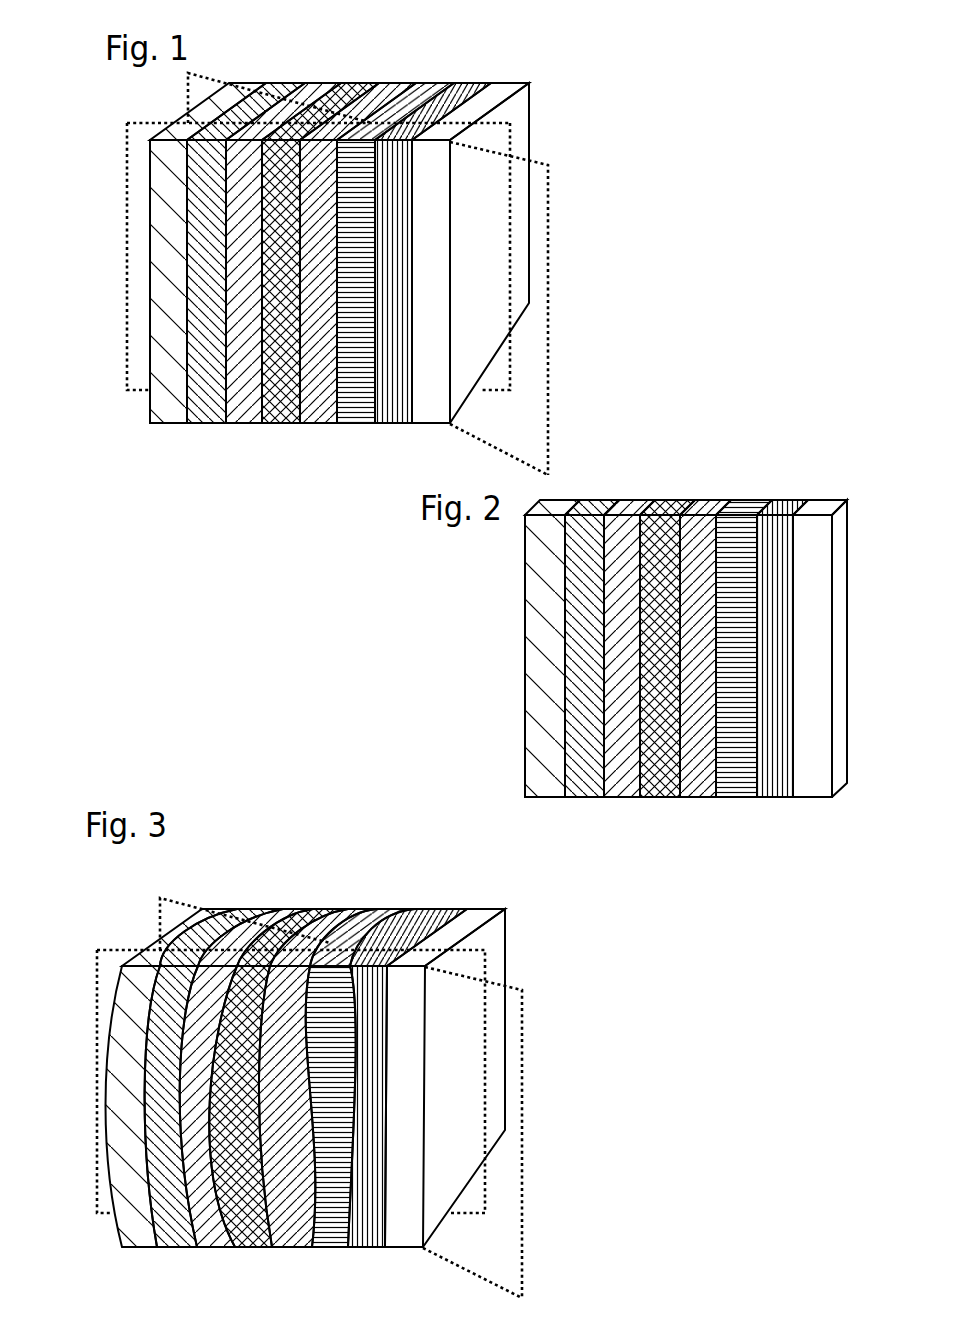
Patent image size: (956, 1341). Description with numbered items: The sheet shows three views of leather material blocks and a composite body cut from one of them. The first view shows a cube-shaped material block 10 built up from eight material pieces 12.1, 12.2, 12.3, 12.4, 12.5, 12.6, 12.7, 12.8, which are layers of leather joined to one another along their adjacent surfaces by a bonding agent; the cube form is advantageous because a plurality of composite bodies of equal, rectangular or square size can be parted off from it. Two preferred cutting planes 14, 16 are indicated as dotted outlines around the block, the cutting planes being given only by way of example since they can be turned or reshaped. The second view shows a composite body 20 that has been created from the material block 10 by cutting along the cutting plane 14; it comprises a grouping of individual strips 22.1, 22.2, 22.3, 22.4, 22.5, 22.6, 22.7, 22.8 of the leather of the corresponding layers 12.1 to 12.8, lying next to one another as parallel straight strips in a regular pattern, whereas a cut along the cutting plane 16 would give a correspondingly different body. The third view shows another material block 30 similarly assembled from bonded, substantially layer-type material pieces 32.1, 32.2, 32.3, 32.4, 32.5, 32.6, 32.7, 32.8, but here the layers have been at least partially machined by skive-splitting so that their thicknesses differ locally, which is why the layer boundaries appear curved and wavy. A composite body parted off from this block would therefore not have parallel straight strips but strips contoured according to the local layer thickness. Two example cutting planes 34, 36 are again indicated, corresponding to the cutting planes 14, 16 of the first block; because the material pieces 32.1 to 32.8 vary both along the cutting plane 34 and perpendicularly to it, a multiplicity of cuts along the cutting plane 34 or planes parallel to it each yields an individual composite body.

In FIG. 1, the material block 10 is at (548, 57).
In FIG. 1, the material piece 12.1 is at (158, 372).
In FIG. 1, the material piece 12.2 is at (200, 375).
In FIG. 1, the material piece 12.3 is at (236, 375).
In FIG. 1, the material piece 12.4 is at (273, 375).
In FIG. 1, the material piece 12.5 is at (312, 375).
In FIG. 1, the material piece 12.6 is at (350, 375).
In FIG. 1, the material piece 12.7 is at (390, 380).
In FIG. 1, the material piece 12.8 is at (420, 385).
In FIG. 1, the cutting plane 14 is at (510, 123).
In FIG. 1, the cutting plane 16 is at (550, 188).
In FIG. 2, the composite body 20 is at (735, 472).
In FIG. 2, the material piece 22.1 is at (535, 752).
In FIG. 2, the material piece 22.2 is at (577, 752).
In FIG. 2, the material piece 22.3 is at (615, 752).
In FIG. 2, the material piece 22.4 is at (652, 752).
In FIG. 2, the material piece 22.5 is at (690, 752).
In FIG. 2, the material piece 22.6 is at (728, 752).
In FIG. 2, the material piece 22.7 is at (768, 755).
In FIG. 2, the material piece 22.8 is at (798, 760).
In FIG. 3, the material block 30 is at (298, 878).
In FIG. 3, the material piece 32.1 is at (143, 1197).
In FIG. 3, the material piece 32.2 is at (170, 1185).
In FIG. 3, the material piece 32.3 is at (212, 1200).
In FIG. 3, the material piece 32.4 is at (250, 1190).
In FIG. 3, the material piece 32.5 is at (286, 1205).
In FIG. 3, the material piece 32.6 is at (328, 1200).
In FIG. 3, the material piece 32.7 is at (366, 1210).
In FIG. 3, the material piece 32.8 is at (400, 1210).
In FIG. 3, the cutting plane 34 is at (487, 1070).
In FIG. 3, the cutting plane 36 is at (523, 1027).